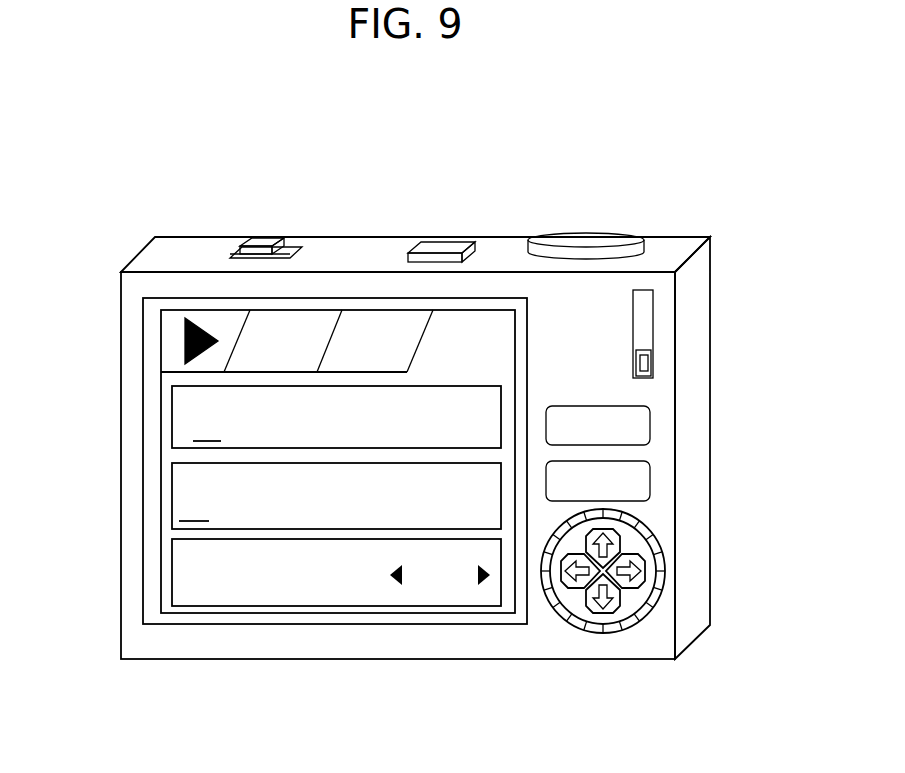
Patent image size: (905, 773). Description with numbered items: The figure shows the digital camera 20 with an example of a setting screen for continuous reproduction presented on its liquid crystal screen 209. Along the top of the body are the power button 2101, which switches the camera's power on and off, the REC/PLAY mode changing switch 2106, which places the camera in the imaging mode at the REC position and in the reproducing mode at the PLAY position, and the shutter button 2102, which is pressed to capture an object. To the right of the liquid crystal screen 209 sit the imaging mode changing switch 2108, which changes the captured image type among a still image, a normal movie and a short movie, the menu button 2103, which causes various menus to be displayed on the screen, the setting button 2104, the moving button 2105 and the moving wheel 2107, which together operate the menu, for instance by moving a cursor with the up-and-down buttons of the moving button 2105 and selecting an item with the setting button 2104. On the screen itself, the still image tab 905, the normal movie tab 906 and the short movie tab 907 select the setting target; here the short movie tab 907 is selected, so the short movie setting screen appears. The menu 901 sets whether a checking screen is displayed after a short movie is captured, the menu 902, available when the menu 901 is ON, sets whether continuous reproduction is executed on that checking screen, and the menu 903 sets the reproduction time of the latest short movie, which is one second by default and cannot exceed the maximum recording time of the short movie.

The digital camera 20 is at (166, 243).
The liquid crystal screen 209 is at (232, 613).
The menu 901 is at (172, 415).
The menu 902 is at (172, 490).
The menu 903 is at (172, 560).
The still image tab 905 is at (322, 318).
The normal movie tab 906 is at (373, 318).
The short movie tab 907 is at (485, 318).
The power button 2101 is at (445, 247).
The shutter button 2102 is at (587, 237).
The menu button 2103 is at (640, 424).
The setting button 2104 is at (640, 479).
The moving button 2105 is at (648, 569).
The REC/PLAY mode changing switch 2106 is at (252, 242).
The moving wheel 2107 is at (643, 616).
The imaging mode changing switch 2108 is at (647, 359).